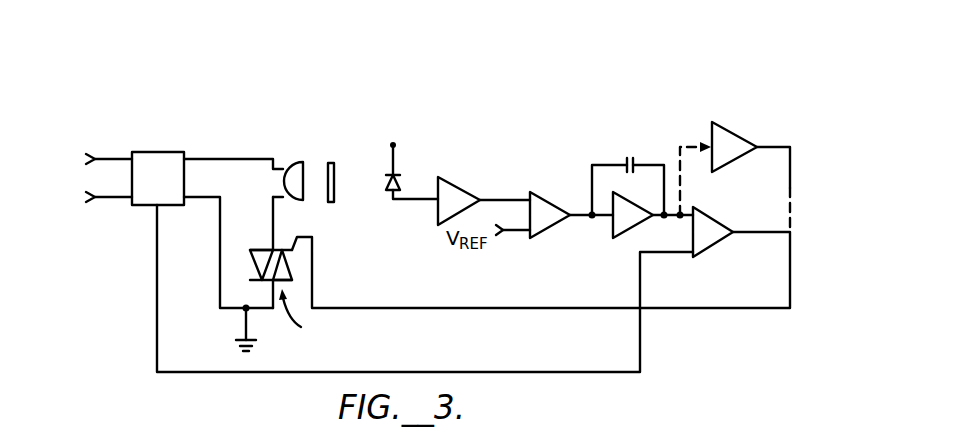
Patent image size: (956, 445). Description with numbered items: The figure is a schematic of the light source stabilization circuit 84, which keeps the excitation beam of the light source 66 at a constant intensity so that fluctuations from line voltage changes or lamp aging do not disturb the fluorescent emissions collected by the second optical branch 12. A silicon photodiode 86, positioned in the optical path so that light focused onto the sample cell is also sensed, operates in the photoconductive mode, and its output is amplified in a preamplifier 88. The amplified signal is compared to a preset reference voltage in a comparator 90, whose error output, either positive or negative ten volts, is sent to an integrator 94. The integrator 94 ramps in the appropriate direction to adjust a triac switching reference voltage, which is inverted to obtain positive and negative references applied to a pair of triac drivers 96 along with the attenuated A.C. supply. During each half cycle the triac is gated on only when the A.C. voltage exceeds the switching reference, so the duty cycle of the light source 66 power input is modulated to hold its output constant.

The second optical branch 12 is at (336, 146).
The light source 66 is at (292, 152).
The light source stabilization circuit 84 is at (106, 292).
The silicon photodiode 86 is at (401, 185).
The preamplifier 88 is at (163, 162).
The comparator 90 is at (540, 197).
The integrator 94 is at (641, 119).
The triac drivers 96 is at (751, 117).